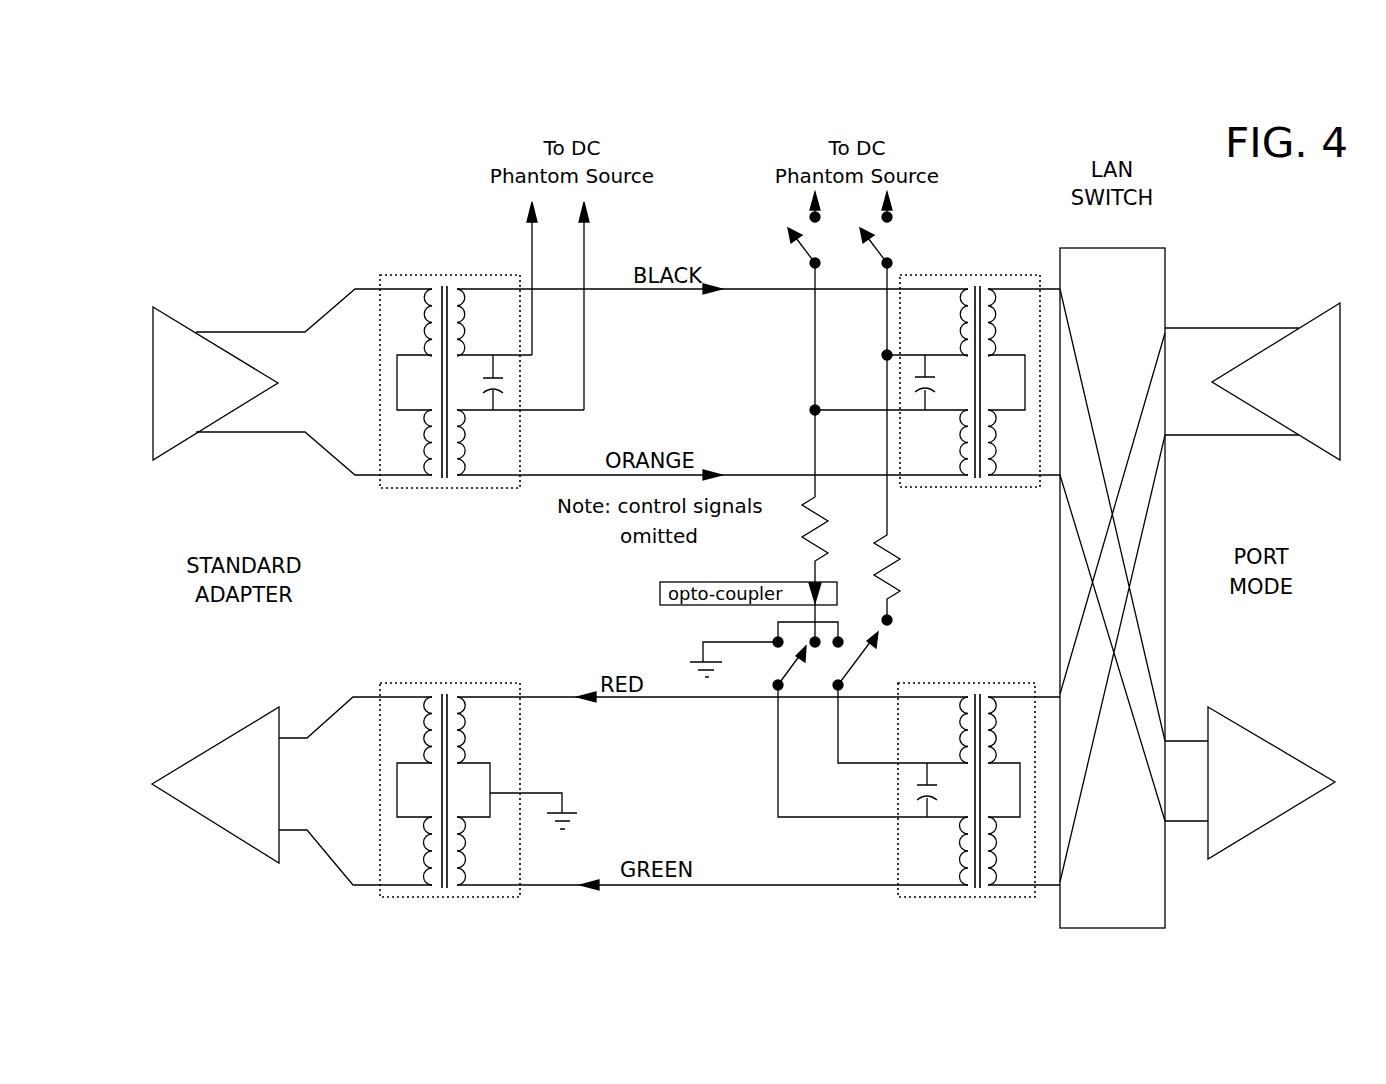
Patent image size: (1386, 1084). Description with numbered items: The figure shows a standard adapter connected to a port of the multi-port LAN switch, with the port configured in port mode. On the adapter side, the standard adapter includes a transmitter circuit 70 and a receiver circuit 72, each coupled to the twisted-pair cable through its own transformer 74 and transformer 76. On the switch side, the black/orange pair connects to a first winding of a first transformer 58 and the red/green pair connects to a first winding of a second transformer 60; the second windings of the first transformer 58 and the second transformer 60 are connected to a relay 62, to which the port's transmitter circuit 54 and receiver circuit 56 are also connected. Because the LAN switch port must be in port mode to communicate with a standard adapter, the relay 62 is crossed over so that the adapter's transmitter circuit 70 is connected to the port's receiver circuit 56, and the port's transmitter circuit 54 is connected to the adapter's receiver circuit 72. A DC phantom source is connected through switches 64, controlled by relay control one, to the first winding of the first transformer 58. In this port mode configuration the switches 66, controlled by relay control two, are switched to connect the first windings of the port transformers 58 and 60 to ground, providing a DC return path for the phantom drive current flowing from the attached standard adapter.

The transmitter circuit 54 is at (1318, 318).
The receiver circuit 56 is at (1236, 726).
The first transformer 58 is at (1000, 488).
The second transformer 60 is at (1010, 897).
The relay 62 is at (1112, 248).
The switches 64 is at (803, 246).
The switches 66 is at (792, 663).
The transmitter circuit 70 is at (181, 316).
The receiver circuit 72 is at (254, 728).
The transformer 74 is at (418, 488).
The transformer 76 is at (418, 897).